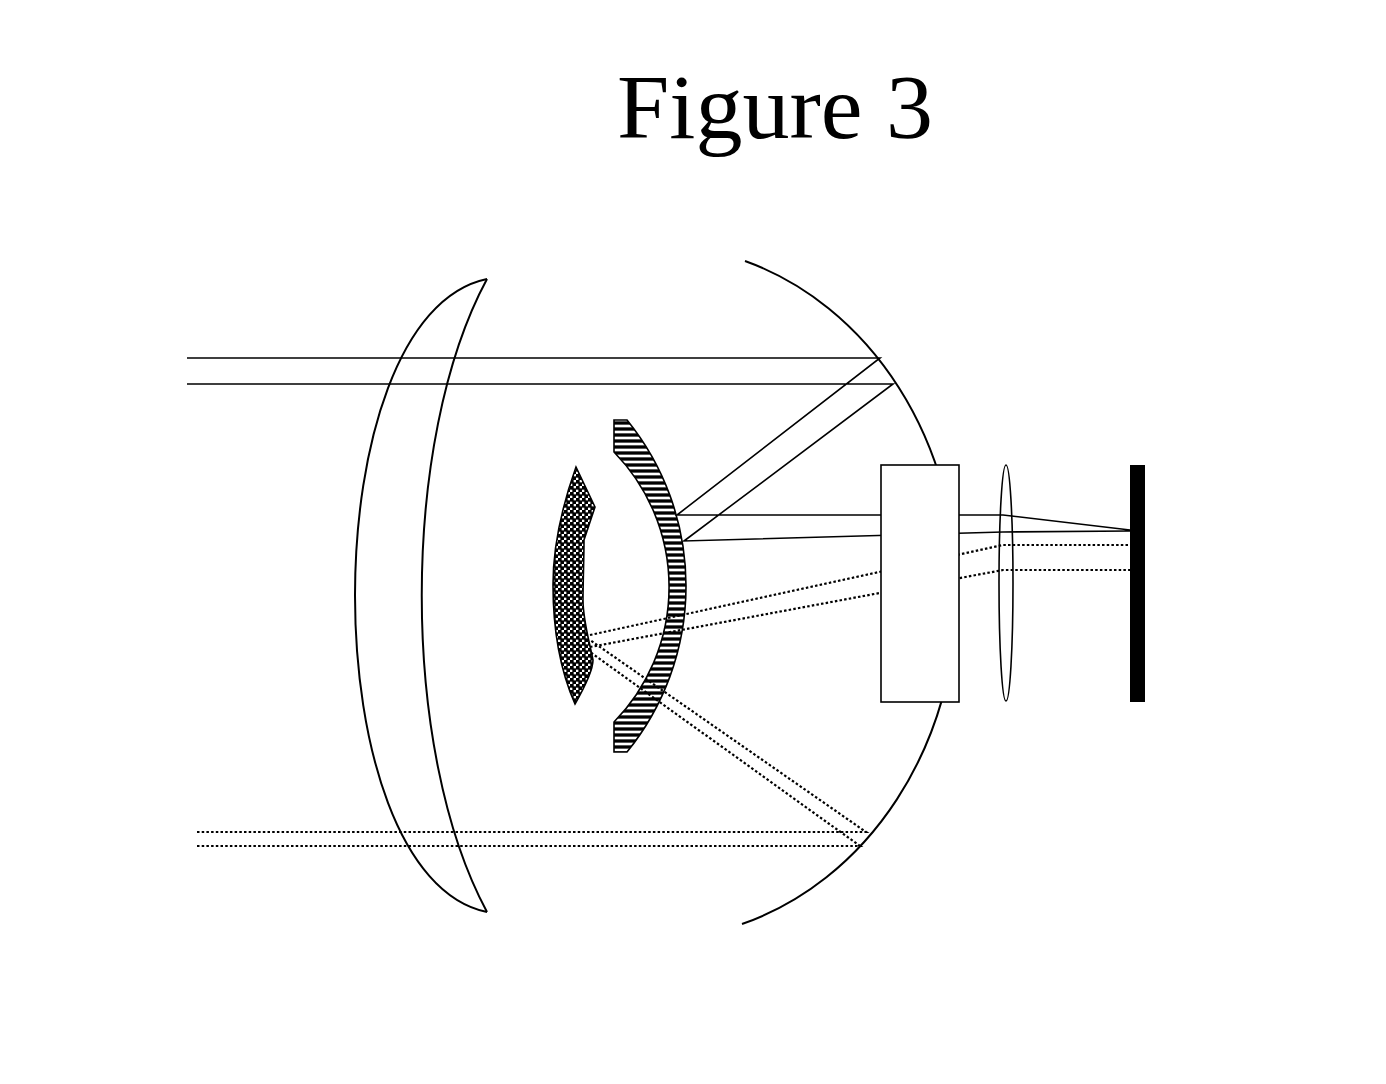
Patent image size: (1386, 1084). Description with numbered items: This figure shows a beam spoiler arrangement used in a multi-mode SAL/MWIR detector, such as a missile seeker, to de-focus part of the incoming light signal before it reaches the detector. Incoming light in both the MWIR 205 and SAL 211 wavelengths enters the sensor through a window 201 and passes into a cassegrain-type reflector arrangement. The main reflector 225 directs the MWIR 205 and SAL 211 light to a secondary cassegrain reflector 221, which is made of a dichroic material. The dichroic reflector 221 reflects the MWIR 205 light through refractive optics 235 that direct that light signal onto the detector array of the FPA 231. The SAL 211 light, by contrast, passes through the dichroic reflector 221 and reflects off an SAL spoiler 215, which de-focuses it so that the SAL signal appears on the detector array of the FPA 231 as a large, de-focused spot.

The window 201 is at (430, 318).
The MWIR light 205 is at (663, 356).
The SAL light 211 is at (373, 828).
The SAL spoiler 215 is at (550, 565).
The secondary cassegrain reflector 221 is at (612, 748).
The main reflector 225 is at (885, 813).
The FPA 231 is at (1147, 493).
The refractive optics 235 is at (1008, 490).